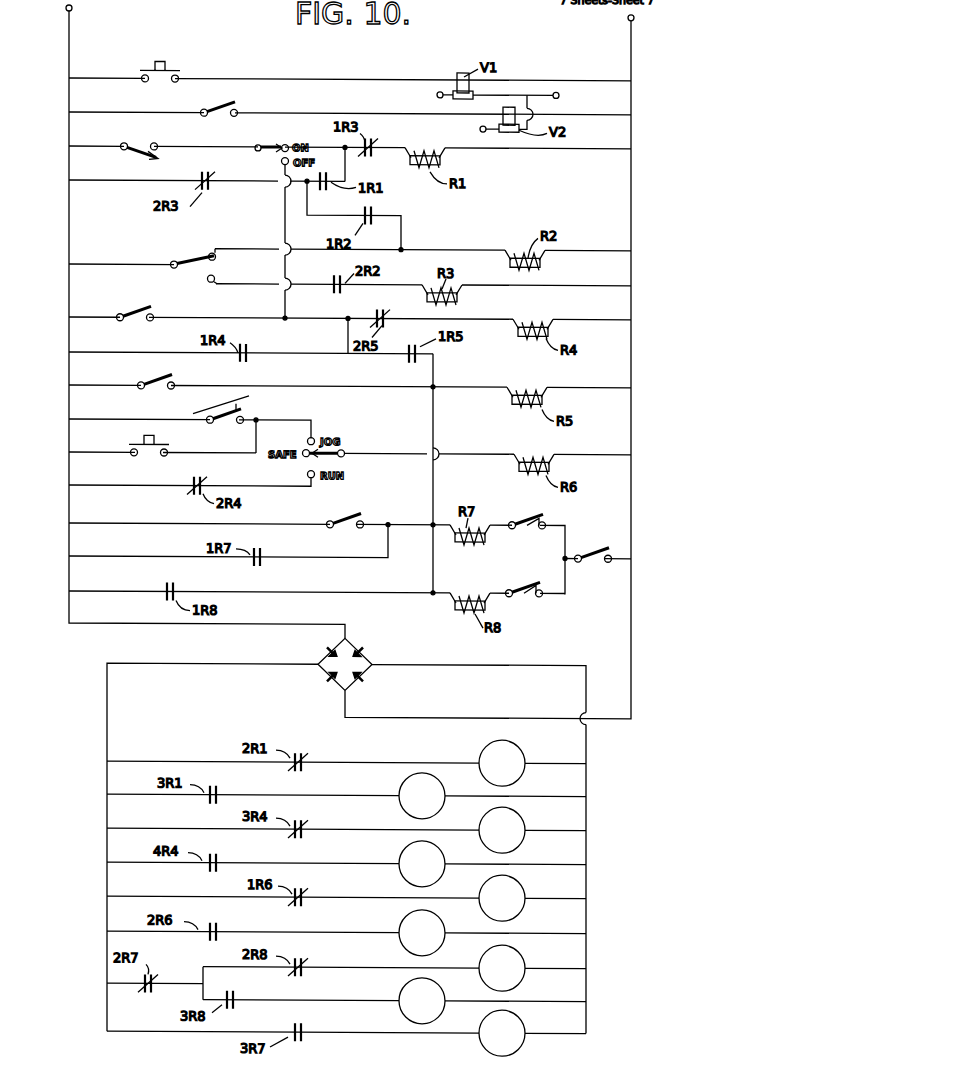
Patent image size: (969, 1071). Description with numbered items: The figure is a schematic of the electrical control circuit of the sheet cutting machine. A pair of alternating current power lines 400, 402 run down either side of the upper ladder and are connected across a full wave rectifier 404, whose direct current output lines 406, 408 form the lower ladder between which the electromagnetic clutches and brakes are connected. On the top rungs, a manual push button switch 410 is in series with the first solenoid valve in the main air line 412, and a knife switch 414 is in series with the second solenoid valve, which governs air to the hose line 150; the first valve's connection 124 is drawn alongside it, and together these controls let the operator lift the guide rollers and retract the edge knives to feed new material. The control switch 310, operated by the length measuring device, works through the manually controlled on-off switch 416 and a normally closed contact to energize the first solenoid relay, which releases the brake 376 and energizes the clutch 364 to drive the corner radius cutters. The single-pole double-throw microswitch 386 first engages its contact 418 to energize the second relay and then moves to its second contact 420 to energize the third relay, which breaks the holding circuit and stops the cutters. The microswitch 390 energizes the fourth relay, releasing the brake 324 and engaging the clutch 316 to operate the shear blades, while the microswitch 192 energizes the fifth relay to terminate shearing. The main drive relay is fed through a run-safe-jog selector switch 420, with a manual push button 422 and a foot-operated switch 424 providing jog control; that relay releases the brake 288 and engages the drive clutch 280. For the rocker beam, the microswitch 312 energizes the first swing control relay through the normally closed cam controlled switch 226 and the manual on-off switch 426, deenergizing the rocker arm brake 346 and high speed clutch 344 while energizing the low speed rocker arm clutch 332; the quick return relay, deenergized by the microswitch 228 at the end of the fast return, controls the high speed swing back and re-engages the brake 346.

The alternating current power line 400 is at (68, 32).
The alternating current power line 402 is at (634, 50).
The full wave rectifier 404 is at (376, 645).
The direct current output line 406 is at (106, 700).
The direct current output line 408 is at (588, 748).
The manual push button switch 410 is at (154, 64).
The main air line 412 is at (559, 93).
The knife switch 414 is at (233, 106).
The manually controlled on-off switch 416 is at (271, 143).
The first contact of microswitch 386 418 is at (216, 252).
The second contact of microswitch 386 / single-pole triple-throw manual selector swi 420 is at (357, 437).
The manual push button 422 is at (130, 446).
The foot-operated switch 424 is at (250, 412).
The manual on-off switch 426 is at (593, 547).
The control switch 310 is at (138, 155).
The microswitch 312 is at (348, 513).
The conduit to valve V1 124 is at (438, 93).
The hose line 150 is at (482, 127).
The single-pole double-throw microswitch 386 is at (194, 262).
The microswitch 390 is at (132, 308).
The microswitch 192 is at (153, 380).
The normally closed cam controlled switch 226 is at (530, 517).
The normally closed microswitch 228 is at (543, 602).
The brake 376 is at (518, 758).
The magnetic clutch 364 is at (400, 787).
The brake 324 is at (518, 825).
The electromagnetic clutch 316 is at (402, 855).
The brake 288 is at (518, 892).
The drive clutch 280 is at (402, 924).
The rocker arm brake 346 is at (520, 960).
The high speed clutch 344 is at (396, 993).
The low speed rocker arm clutch 332 is at (517, 1046).